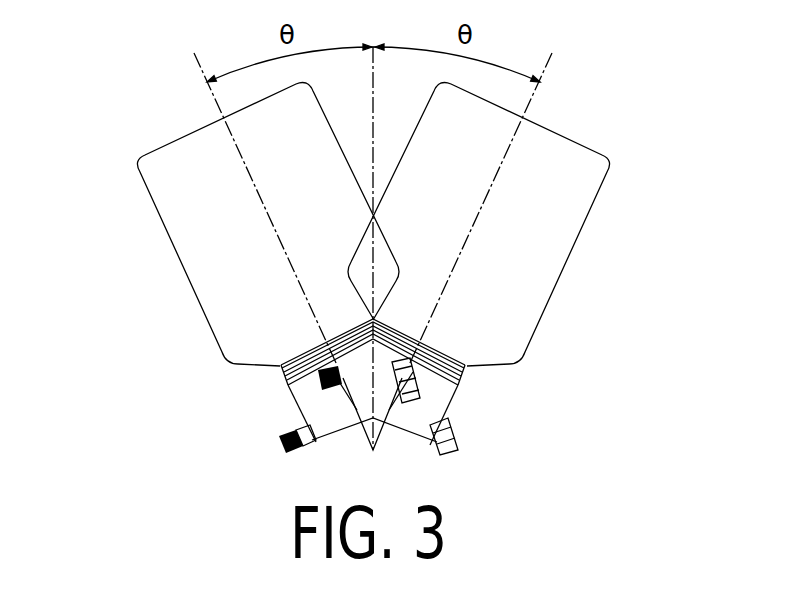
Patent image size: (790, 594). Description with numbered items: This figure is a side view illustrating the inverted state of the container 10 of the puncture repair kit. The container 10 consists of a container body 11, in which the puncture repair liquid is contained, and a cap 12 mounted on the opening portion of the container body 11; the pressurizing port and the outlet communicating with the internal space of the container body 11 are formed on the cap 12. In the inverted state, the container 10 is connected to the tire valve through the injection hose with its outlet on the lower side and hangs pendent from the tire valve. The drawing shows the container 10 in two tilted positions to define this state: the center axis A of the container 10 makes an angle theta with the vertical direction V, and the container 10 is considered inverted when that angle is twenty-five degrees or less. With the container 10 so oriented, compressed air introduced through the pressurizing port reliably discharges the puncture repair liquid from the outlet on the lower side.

The container 10 is at (155, 210).
The container body 11 is at (522, 338).
The cap 12 is at (433, 403).
The center axis A is at (207, 82).
The vertical direction V is at (374, 95).